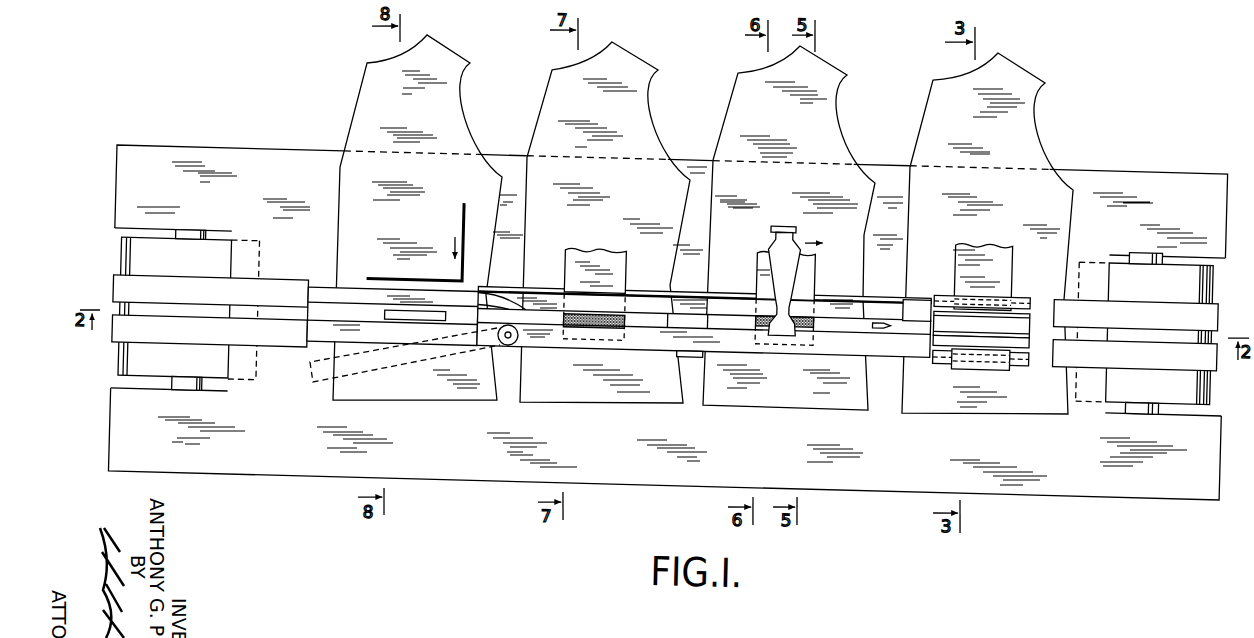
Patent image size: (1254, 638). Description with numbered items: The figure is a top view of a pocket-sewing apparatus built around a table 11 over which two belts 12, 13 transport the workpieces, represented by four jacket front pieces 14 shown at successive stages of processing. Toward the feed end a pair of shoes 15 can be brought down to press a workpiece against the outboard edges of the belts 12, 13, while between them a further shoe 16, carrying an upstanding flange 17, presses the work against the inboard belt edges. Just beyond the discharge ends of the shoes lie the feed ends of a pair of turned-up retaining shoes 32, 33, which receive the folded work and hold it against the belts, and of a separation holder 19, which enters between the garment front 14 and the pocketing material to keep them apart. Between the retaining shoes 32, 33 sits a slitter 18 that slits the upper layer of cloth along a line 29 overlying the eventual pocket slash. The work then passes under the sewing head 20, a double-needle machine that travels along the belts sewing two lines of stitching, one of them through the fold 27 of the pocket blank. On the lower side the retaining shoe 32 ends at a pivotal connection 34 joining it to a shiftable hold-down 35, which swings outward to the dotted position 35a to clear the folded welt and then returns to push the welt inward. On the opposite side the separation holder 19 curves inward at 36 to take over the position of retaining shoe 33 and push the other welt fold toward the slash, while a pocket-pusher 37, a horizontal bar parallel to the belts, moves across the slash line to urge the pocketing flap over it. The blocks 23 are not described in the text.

The table 11 is at (1116, 150).
The belt 12 is at (287, 342).
The belt 13 is at (290, 276).
The jacket front piece 14 is at (444, 390).
The shoe 15 is at (1027, 274).
The shoe 16 is at (1027, 320).
The upstanding flange 17 is at (1026, 311).
The slitter 18 is at (884, 302).
The separation holder 19 is at (354, 282).
The sewing head 20 is at (772, 229).
The blocks 23 is at (629, 245).
The fold 27 is at (632, 307).
The line 29 is at (632, 312).
The retaining shoe 32 is at (922, 336).
The retaining shoe 33 is at (928, 287).
The pivotal connection 34 is at (517, 328).
The shiftable hold-down 35 is at (312, 322).
The dotted-outline position of hold-down 35a is at (398, 360).
The curved portion of separation holder 36 is at (501, 279).
The pocket-pusher 37 is at (464, 204).